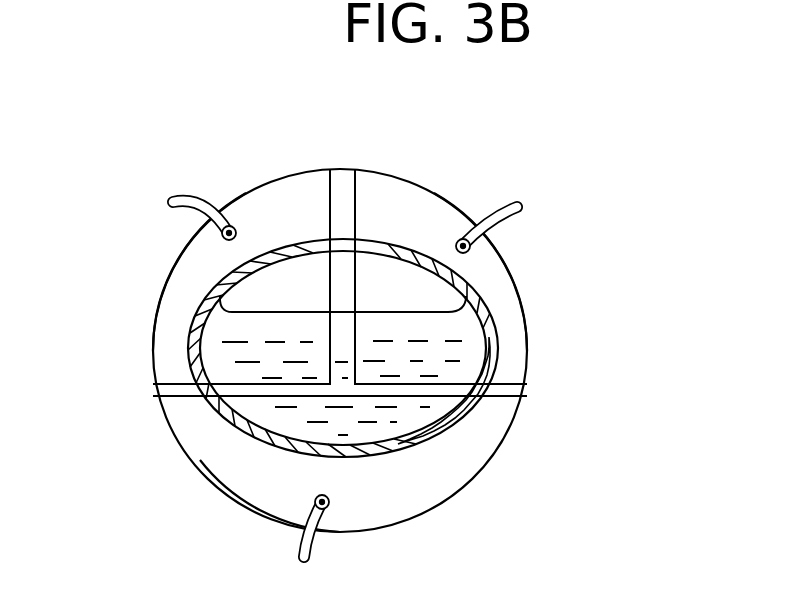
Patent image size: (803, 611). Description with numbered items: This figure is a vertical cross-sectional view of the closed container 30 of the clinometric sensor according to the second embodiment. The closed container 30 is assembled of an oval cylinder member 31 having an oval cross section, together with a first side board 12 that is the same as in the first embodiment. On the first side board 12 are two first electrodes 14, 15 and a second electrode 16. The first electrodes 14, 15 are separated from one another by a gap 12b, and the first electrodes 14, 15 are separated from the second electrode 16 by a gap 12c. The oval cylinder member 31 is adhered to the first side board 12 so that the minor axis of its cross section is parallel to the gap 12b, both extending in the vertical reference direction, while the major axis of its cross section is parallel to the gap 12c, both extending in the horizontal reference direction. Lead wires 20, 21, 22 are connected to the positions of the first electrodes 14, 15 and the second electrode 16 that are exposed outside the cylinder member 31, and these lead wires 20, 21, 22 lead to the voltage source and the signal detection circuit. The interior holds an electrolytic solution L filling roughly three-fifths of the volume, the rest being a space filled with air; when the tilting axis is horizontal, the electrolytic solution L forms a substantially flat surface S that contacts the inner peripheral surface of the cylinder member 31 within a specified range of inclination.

The first side board 12 is at (460, 493).
The gap between the first electrodes 12b is at (338, 190).
The gap between the first electrodes and the second electrode 12c is at (165, 390).
The first electrode 14 is at (170, 305).
The first electrode 15 is at (507, 293).
The second electrode 16 is at (240, 482).
The lead wire 20 is at (180, 207).
The lead wire 21 is at (492, 210).
The lead wire 22 is at (313, 547).
The closed container 30 is at (507, 437).
The oval cylinder member 31 is at (483, 338).
The surface S is at (290, 312).
The electrolytic solution L is at (255, 408).